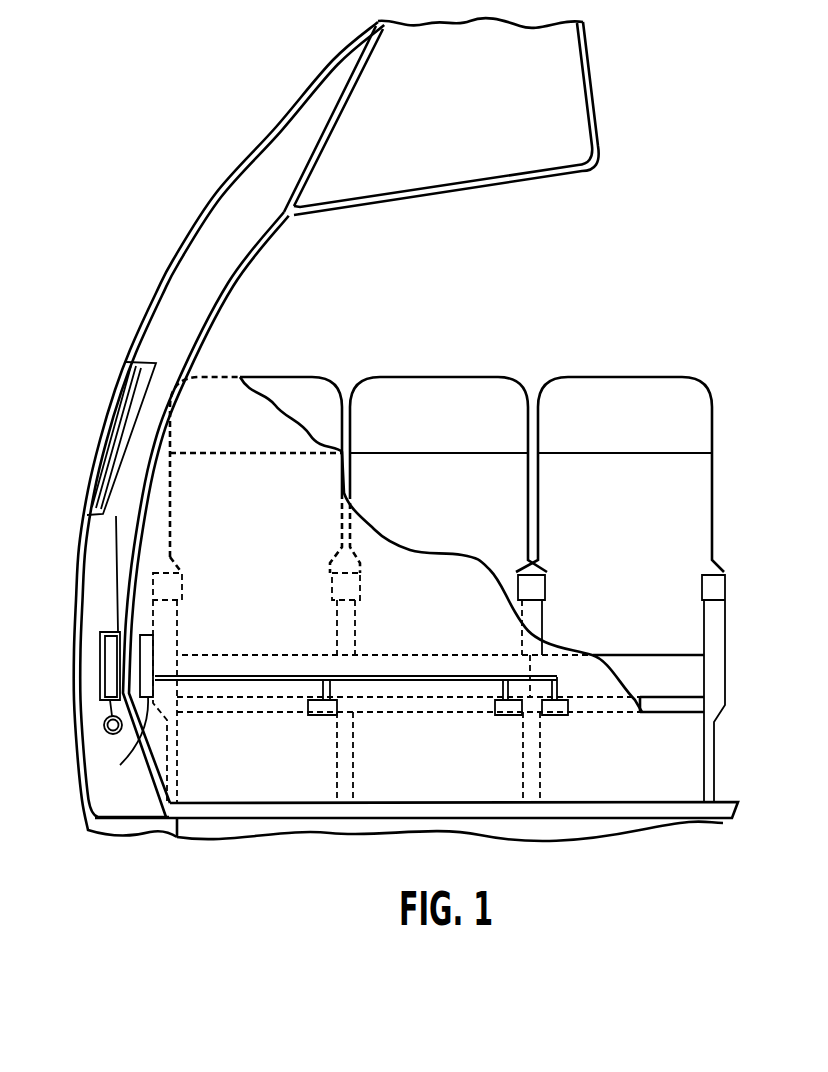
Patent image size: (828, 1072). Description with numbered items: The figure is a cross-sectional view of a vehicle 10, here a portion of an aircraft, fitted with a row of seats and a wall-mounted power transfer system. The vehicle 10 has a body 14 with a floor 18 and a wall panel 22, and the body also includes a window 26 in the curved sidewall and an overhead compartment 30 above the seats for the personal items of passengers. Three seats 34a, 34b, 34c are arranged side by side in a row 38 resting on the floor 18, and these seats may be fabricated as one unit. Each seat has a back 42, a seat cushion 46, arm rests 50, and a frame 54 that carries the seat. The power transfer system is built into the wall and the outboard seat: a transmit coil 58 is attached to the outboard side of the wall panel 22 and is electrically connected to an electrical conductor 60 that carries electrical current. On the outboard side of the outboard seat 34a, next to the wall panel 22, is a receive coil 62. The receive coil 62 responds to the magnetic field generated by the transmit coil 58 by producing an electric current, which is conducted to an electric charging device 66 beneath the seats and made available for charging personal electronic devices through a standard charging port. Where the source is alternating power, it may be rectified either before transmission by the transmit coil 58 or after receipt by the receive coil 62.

The vehicle 10 is at (60, 220).
The body 14 is at (78, 378).
The floor 18 is at (723, 800).
The wall panel 22 is at (191, 353).
The window 26 is at (107, 427).
The overhead compartment 30 is at (596, 104).
The seat 34a is at (290, 375).
The seat 34b is at (483, 377).
The seat 34c is at (663, 377).
The row 38 is at (459, 526).
The back 42 is at (247, 546).
The seat cushion 46 is at (227, 652).
The arm rests 50 is at (163, 585).
The frame 54 is at (652, 715).
The transmit coil 58 is at (108, 662).
The electrical conductor 60 is at (103, 735).
The receive coil 62 is at (133, 716).
The electric charging device 66 is at (552, 714).